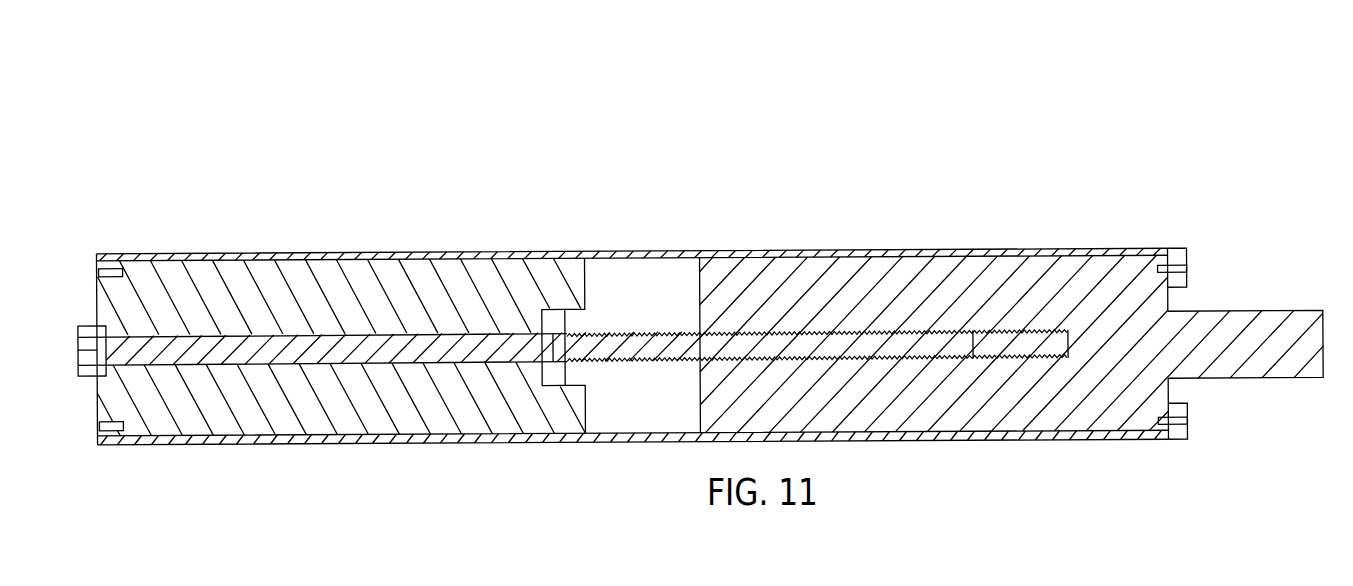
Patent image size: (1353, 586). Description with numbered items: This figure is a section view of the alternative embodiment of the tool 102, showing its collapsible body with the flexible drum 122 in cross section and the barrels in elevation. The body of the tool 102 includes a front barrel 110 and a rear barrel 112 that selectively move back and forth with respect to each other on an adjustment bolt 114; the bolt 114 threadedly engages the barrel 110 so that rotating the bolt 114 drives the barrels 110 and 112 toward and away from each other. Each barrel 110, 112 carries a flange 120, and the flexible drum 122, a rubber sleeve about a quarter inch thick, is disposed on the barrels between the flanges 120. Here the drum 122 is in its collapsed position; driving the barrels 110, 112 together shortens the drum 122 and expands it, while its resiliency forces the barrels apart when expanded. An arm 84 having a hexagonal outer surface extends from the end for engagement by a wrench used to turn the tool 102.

The tool 102 is at (686, 239).
The front barrel 110 is at (888, 248).
The rear barrel 112 is at (353, 250).
The adjustment bolt 114 is at (640, 325).
The flange 120 is at (102, 252).
The flexible drum 122 is at (538, 248).
The arm 84 is at (1290, 311).